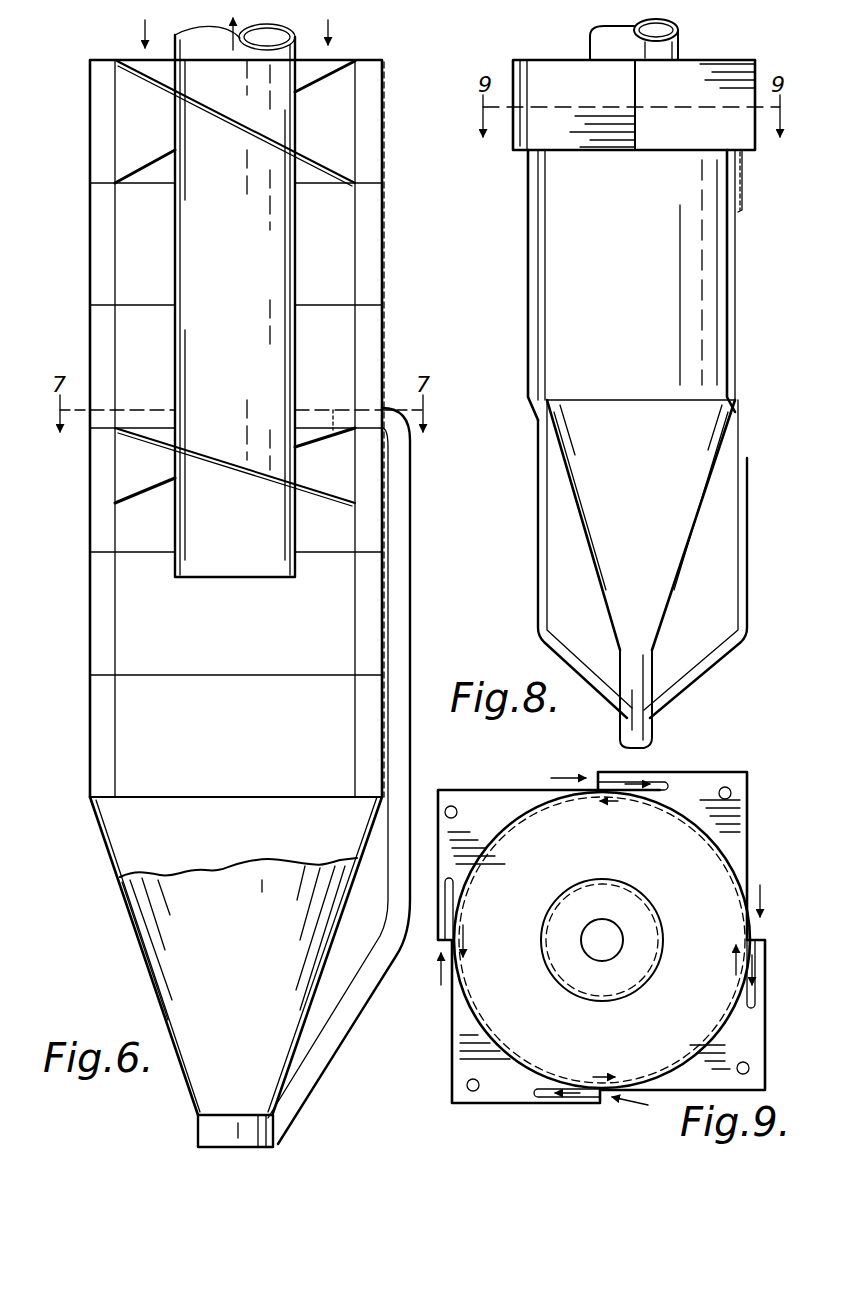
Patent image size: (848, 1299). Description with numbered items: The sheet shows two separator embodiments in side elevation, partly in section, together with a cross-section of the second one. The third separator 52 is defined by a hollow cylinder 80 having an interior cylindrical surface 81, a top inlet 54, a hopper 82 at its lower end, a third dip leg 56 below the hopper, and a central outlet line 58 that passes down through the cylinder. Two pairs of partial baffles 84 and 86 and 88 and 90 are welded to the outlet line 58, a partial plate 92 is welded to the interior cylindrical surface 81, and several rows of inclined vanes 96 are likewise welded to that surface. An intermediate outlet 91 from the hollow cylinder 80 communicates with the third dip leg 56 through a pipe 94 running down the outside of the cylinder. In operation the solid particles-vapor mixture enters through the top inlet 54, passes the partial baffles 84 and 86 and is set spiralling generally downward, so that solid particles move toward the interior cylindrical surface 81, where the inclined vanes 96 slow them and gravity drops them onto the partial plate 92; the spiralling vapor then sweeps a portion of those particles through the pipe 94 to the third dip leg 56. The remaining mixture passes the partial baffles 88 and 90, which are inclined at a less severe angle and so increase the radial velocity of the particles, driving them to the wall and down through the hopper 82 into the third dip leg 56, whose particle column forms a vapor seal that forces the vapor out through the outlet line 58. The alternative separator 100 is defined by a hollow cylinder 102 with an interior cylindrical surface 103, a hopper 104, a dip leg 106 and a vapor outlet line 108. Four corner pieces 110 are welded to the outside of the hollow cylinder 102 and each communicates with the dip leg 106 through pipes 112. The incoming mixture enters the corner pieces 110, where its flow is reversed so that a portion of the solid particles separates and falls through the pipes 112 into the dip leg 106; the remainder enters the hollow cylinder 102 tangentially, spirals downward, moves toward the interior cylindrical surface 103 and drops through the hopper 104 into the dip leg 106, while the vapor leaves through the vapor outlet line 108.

In FIG. 6, the third separator 52 is at (88, 207).
In FIG. 6, the top inlet 54 is at (136, 52).
In FIG. 6, the third dip leg 56 is at (198, 1127).
In FIG. 6, the outlet line 58 is at (224, 580).
In FIG. 6, the hollow cylinder 80 is at (386, 262).
In FIG. 6, the interior cylindrical surface 81 is at (380, 338).
In FIG. 6, the hopper 82 is at (140, 952).
In FIG. 6, the partial baffle 84 is at (304, 95).
In FIG. 6, the partial baffle 86 is at (338, 170).
In FIG. 6, the partial baffle 88 is at (303, 448).
In FIG. 6, the partial baffle 90 is at (303, 500).
In FIG. 6, the outlet 91 is at (338, 412).
In FIG. 6, the partial plate 92 is at (108, 432).
In FIG. 6, the pipe 94 is at (333, 1043).
In FIG. 6, the inclined vanes 96 is at (112, 252).
In FIG. 8, the separator 100 is at (524, 221).
In FIG. 9, the separator 100 is at (716, 752).
In FIG. 8, the hollow cylinder 102 is at (526, 292).
In FIG. 9, the hollow cylinder 102 is at (722, 873).
In FIG. 9, the interior cylindrical surface 103 is at (702, 840).
In FIG. 8, the hopper 104 is at (686, 590).
In FIG. 8, the dip leg 106 is at (652, 665).
In FIG. 9, the dip leg 106 is at (603, 922).
In FIG. 8, the vapor outlet line 108 is at (680, 38).
In FIG. 9, the vapor outlet line 108 is at (608, 876).
In FIG. 8, the corner pieces 110 is at (518, 62).
In FIG. 9, the corner pieces 110 is at (492, 788).
In FIG. 8, the pipes 112 is at (748, 472).
In FIG. 9, the pipes 112 is at (722, 788).